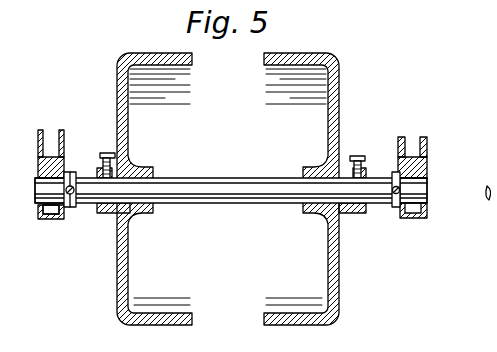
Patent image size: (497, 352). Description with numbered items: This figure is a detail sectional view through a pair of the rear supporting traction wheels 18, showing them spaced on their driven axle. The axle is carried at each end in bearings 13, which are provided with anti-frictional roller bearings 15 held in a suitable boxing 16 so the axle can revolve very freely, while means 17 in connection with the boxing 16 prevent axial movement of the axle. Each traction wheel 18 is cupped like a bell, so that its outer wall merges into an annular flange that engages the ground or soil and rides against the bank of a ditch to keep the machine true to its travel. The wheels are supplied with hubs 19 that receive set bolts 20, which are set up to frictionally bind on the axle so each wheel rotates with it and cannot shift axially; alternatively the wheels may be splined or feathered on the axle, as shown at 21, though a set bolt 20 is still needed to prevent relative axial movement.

The bearings 13 is at (56, 216).
The anti-frictional roller bearings 15 is at (48, 158).
The boxing 16 is at (50, 214).
The means to prevent axial movement 17 is at (71, 201).
The supporting traction wheels 18 is at (181, 127).
The hubs 19 is at (141, 211).
The set bolts 20 is at (106, 155).
The splining or feathering 21 is at (228, 205).